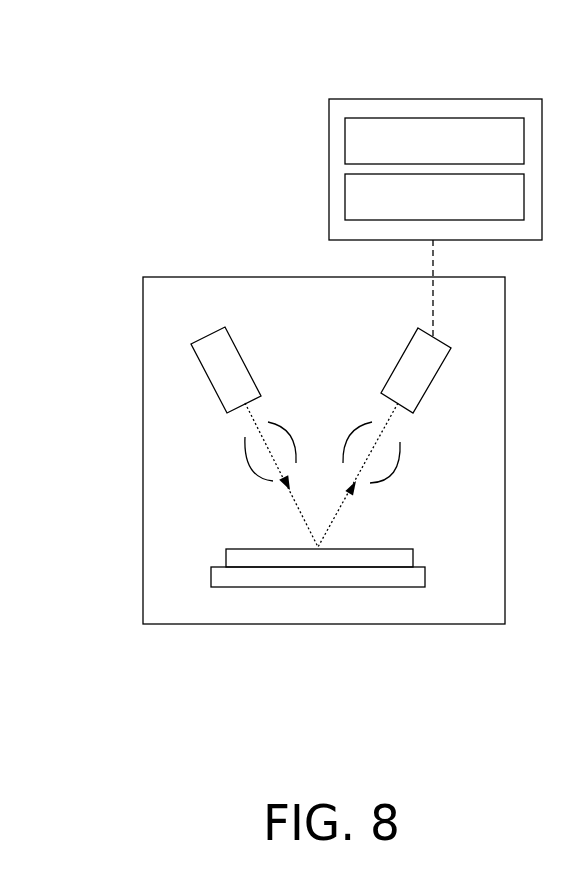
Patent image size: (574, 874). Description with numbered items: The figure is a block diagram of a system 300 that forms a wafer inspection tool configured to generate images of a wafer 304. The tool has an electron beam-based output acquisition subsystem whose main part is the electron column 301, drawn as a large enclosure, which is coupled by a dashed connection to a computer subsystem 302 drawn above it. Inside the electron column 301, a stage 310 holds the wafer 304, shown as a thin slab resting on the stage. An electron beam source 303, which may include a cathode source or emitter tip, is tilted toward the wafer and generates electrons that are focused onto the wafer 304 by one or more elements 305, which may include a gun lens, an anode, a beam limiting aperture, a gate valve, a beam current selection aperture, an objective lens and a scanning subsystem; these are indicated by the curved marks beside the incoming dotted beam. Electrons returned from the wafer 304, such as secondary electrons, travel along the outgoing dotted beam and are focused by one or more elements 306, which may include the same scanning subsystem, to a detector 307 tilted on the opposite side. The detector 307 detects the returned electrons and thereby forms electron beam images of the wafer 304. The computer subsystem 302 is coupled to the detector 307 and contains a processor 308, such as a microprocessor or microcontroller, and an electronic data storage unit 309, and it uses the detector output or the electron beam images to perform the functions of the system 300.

The system 300 is at (160, 118).
The electron column 301 is at (297, 277).
The computer subsystem 302 is at (433, 99).
The electron beam source 303 is at (230, 343).
The wafer 304 is at (367, 548).
The one or more elements 305 is at (258, 473).
The one or more elements 306 is at (392, 468).
The detector 307 is at (410, 345).
The processor 308 is at (434, 141).
The electronic data storage unit 309 is at (434, 197).
The stage 310 is at (425, 577).